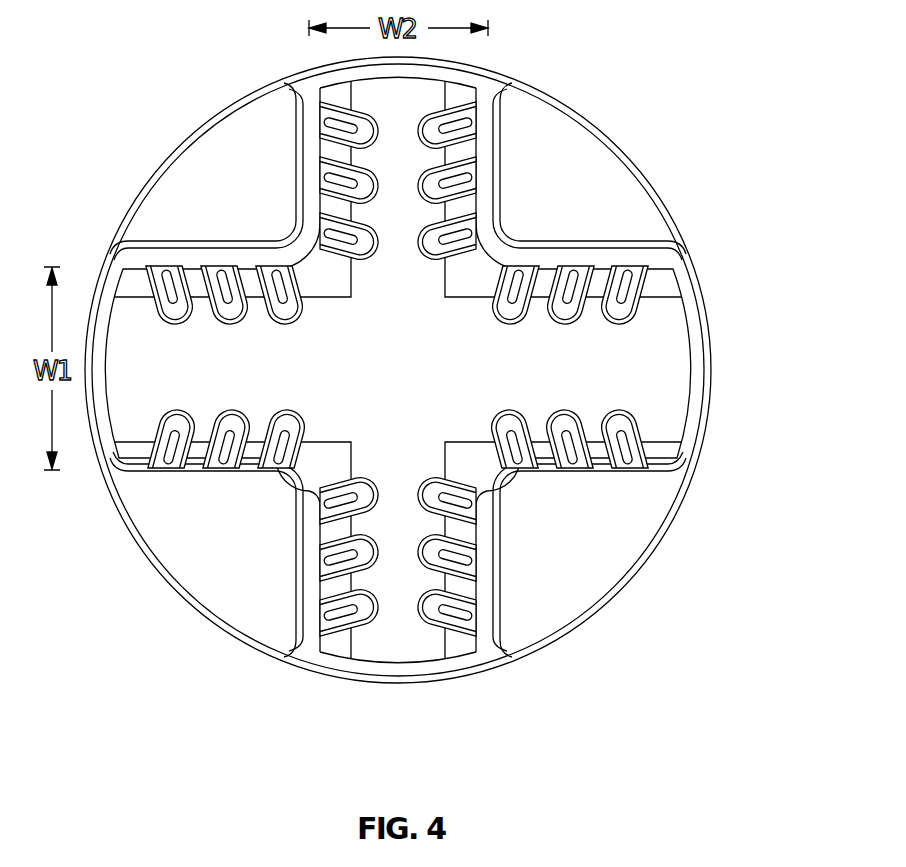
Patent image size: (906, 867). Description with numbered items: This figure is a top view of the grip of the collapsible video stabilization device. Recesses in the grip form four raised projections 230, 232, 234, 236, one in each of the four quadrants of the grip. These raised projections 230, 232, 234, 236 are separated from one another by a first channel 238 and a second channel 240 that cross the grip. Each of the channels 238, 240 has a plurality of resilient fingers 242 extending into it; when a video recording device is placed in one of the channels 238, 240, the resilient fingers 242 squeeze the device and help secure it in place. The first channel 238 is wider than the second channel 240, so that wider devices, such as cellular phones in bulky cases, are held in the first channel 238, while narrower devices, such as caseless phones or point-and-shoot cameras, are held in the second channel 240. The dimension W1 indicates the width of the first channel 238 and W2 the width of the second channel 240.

The raised projection 230 is at (612, 172).
The raised projection 232 is at (598, 589).
The raised projection 234 is at (190, 590).
The raised projection 236 is at (185, 165).
The first channel 238 is at (678, 377).
The second channel 240 is at (414, 648).
The resilient fingers 242 is at (560, 412).